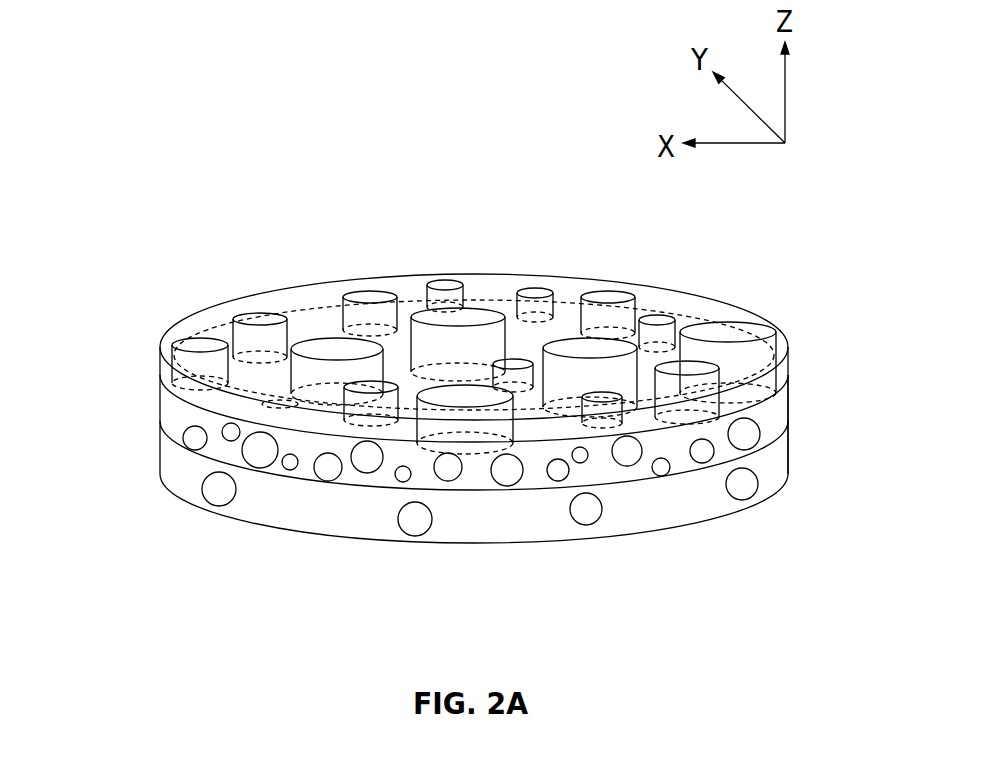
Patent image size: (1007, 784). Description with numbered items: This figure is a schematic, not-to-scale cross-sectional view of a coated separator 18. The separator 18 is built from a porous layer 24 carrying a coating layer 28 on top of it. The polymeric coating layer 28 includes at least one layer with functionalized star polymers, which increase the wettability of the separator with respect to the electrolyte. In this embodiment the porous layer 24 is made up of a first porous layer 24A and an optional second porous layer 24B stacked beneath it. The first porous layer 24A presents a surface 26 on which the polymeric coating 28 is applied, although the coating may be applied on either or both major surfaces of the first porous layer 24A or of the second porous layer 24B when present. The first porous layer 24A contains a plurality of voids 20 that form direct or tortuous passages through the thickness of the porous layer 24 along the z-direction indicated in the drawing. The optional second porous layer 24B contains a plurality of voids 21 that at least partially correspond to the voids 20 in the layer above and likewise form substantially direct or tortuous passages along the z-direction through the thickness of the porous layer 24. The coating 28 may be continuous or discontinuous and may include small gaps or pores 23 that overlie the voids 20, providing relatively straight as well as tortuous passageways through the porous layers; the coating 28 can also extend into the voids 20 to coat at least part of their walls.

The separator 18 is at (150, 163).
The voids 20 is at (627, 408).
The voids 21 is at (220, 489).
The pores 23 is at (367, 297).
The porous layer 24 is at (810, 375).
The first porous layer 24A is at (168, 410).
The second porous layer 24B is at (178, 475).
The surface 26 is at (172, 390).
The coating layer 28 is at (200, 320).